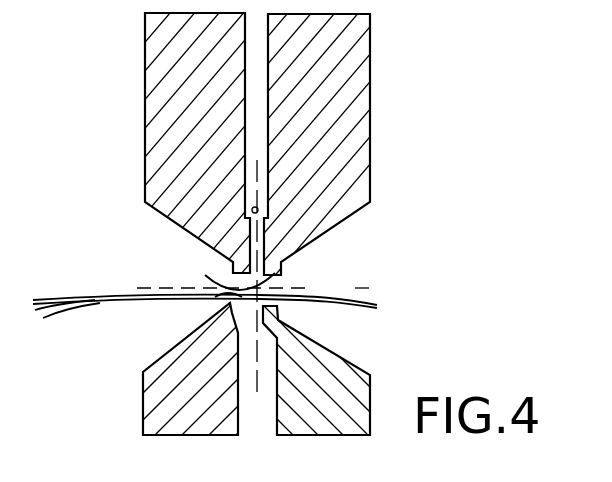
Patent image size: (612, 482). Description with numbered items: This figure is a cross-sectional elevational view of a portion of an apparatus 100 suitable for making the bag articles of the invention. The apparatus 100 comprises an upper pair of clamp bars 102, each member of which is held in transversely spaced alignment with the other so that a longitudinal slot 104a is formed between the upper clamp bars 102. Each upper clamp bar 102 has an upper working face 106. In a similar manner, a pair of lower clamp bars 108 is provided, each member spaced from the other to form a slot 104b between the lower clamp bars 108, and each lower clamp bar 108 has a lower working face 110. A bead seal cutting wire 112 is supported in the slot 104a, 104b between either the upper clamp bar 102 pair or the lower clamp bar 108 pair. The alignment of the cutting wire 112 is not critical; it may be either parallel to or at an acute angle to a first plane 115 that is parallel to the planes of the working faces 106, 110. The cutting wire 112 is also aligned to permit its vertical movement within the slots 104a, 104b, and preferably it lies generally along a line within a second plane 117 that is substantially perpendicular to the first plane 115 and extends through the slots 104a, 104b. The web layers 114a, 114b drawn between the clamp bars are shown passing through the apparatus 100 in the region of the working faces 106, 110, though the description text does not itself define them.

The apparatus 100 is at (466, 137).
The upper pair of clamp bars 102 is at (160, 34).
The longitudinal slot 104a is at (258, 236).
The slot 104b is at (278, 318).
The upper working face 106 is at (210, 277).
The lower clamp bars 108 is at (300, 435).
The lower working face 110 is at (228, 302).
The bead seal cutting wire 112 is at (258, 208).
The upper web layer 114a is at (82, 295).
The lower web layer 114b is at (43, 318).
The first plane 115 is at (140, 286).
The second plane 117 is at (256, 176).